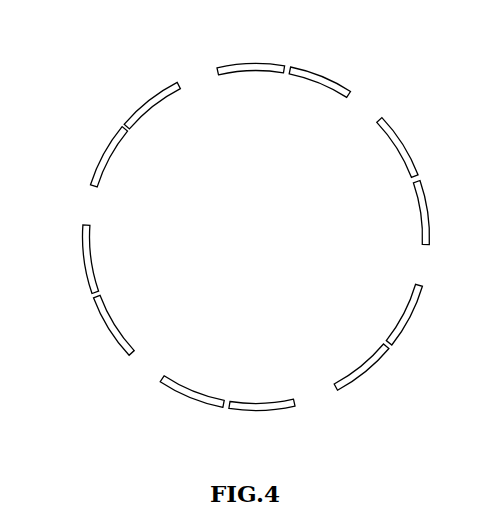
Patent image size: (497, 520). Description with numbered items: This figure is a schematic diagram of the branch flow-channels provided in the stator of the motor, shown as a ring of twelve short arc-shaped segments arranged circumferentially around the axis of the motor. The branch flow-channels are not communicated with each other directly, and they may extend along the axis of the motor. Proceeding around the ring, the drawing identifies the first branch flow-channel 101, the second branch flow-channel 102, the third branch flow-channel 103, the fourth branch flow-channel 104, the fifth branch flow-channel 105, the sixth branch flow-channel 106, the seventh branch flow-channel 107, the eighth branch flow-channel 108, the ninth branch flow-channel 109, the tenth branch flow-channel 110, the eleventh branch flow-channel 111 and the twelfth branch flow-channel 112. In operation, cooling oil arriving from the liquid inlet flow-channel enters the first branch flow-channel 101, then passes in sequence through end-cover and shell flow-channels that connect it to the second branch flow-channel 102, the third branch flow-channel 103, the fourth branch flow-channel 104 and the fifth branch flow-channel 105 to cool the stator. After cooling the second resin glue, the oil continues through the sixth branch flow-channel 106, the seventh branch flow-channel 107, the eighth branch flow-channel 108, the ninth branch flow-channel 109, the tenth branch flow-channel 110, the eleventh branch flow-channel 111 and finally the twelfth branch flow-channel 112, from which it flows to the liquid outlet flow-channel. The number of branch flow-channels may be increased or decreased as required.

The first branch flow-channel 101 is at (85, 259).
The second branch flow-channel 102 is at (108, 151).
The third branch flow-channel 103 is at (142, 108).
The fourth branch flow-channel 104 is at (244, 67).
The fifth branch flow-channel 105 is at (326, 78).
The sixth branch flow-channel 106 is at (108, 323).
The seventh branch flow-channel 107 is at (191, 395).
The eighth branch flow-channel 108 is at (253, 407).
The ninth branch flow-channel 109 is at (368, 365).
The tenth branch flow-channel 110 is at (406, 321).
The eleventh branch flow-channel 111 is at (427, 203).
The twelfth branch flow-channel 112 is at (415, 160).